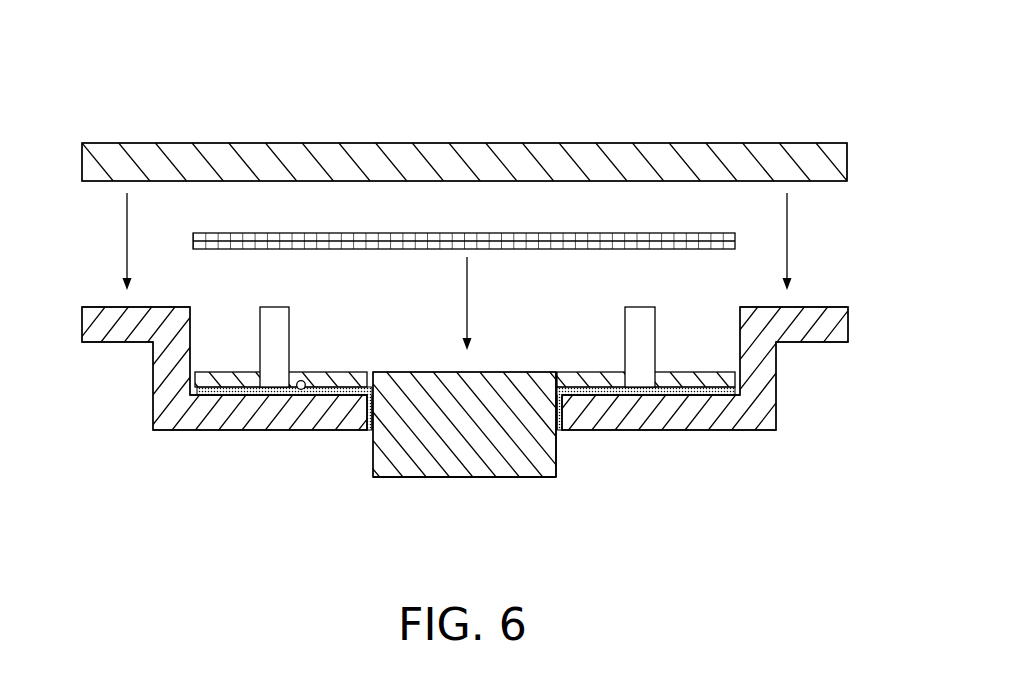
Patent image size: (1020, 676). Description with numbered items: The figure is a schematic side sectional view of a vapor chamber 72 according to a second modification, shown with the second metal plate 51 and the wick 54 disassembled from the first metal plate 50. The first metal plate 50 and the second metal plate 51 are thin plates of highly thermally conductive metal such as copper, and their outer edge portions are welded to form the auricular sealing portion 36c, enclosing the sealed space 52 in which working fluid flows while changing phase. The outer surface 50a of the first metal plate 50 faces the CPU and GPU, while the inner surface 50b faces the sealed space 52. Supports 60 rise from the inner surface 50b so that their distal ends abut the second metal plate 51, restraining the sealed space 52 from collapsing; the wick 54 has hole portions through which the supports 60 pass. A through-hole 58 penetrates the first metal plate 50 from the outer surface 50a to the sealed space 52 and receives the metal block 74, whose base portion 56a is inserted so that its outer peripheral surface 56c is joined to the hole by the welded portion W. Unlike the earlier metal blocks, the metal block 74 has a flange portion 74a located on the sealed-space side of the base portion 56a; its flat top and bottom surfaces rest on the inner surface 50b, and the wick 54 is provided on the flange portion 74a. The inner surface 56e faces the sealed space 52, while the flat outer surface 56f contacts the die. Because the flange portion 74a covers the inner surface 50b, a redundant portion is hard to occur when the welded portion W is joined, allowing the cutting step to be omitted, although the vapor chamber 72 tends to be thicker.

The vapor chamber 72 is at (131, 52).
The second metal plate 51 is at (504, 141).
The wick 54 is at (312, 220).
The sealing portion 36c is at (841, 157).
The sealed space 52 is at (561, 283).
The support 60 is at (279, 312).
The through-hole 58 is at (380, 399).
The base portion 56a is at (420, 378).
The inner surface 56e is at (497, 372).
The outer peripheral surface 56c is at (568, 400).
The outer surface 56f is at (493, 480).
The metal block 74 is at (415, 489).
The flange portion 74a is at (687, 378).
The first metal plate 50 is at (197, 441).
The outer surface 50a is at (680, 432).
The inner surface 50b is at (301, 391).
The welded portion W is at (371, 432).